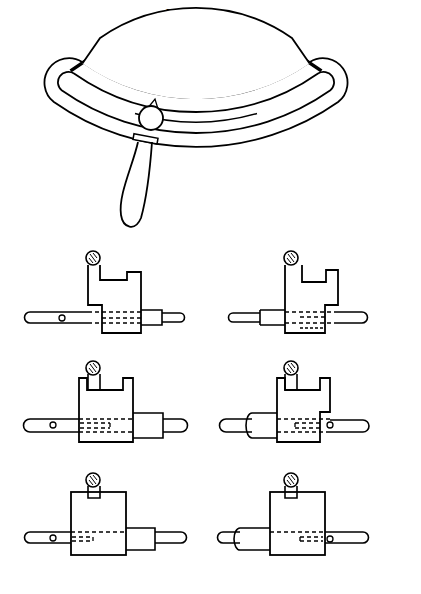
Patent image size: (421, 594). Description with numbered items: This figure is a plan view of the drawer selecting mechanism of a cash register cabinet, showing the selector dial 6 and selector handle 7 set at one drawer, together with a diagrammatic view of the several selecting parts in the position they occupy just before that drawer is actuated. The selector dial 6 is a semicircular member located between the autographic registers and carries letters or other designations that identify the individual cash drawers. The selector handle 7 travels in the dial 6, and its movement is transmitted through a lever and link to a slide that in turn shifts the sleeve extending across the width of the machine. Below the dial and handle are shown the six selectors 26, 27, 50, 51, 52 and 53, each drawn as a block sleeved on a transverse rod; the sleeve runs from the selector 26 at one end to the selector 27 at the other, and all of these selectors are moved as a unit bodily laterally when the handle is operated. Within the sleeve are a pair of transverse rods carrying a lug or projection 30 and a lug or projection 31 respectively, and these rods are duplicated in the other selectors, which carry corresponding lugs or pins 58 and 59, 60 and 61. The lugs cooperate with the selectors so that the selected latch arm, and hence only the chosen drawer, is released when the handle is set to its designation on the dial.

The selector dial 6 is at (298, 54).
The selector handle 7 is at (150, 162).
The selector 26 is at (136, 290).
The selector 27 is at (331, 290).
The lug or projection 30 is at (318, 333).
The lug or projection 31 is at (62, 321).
The selector 50 is at (121, 403).
The selector 51 is at (326, 403).
The selector 52 is at (116, 512).
The selector 53 is at (318, 510).
The lug or pin 58 is at (332, 428).
The lug or pin 59 is at (53, 428).
The lug or pin 60 is at (331, 542).
The lug or pin 61 is at (53, 541).